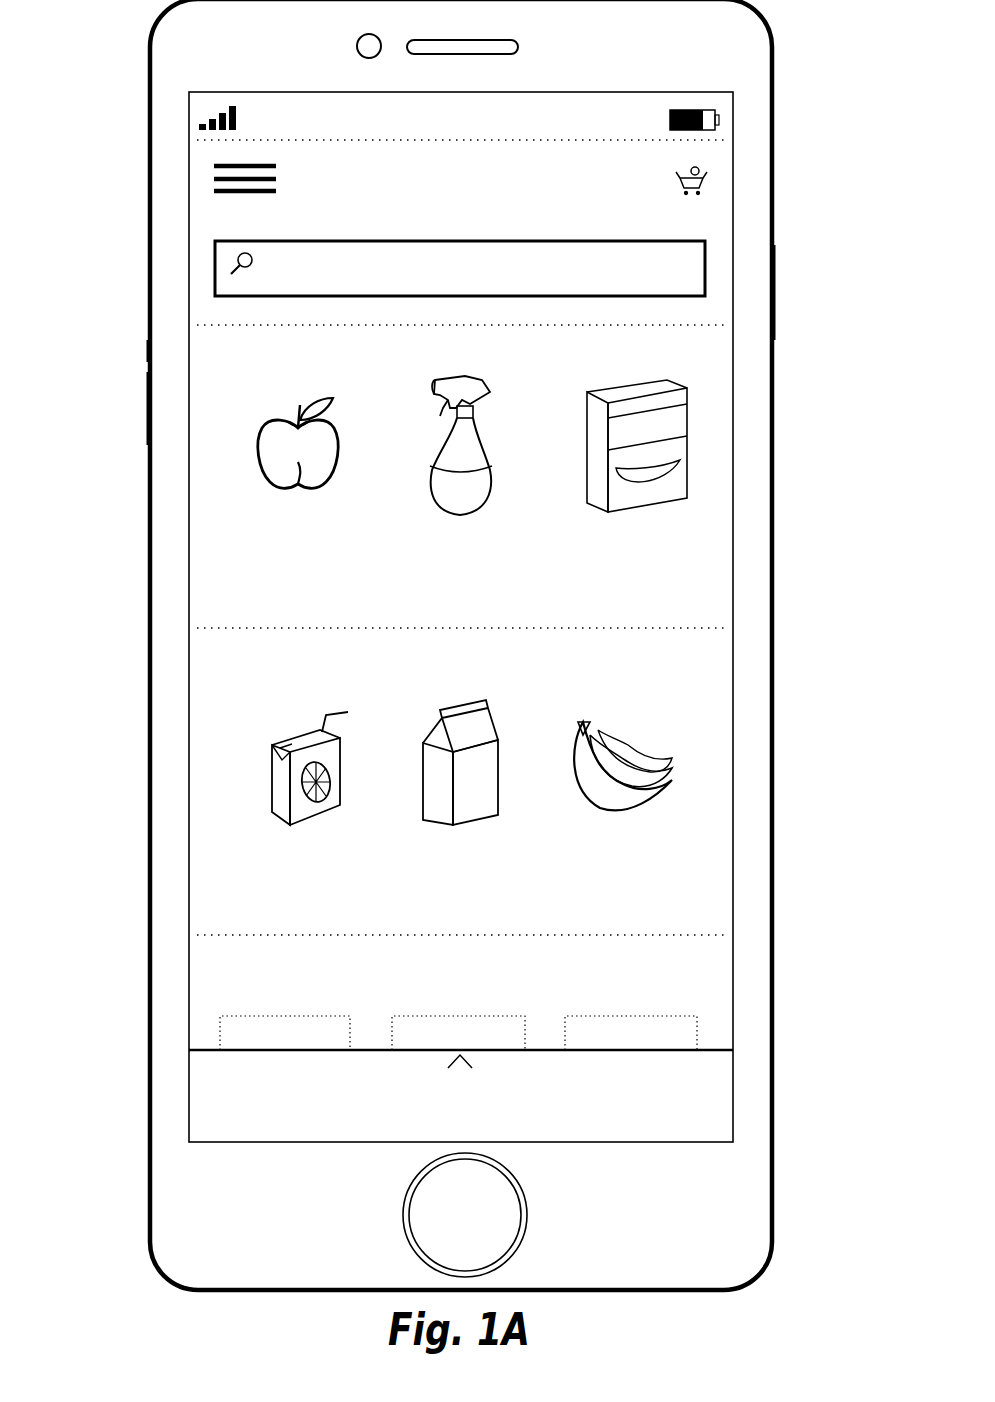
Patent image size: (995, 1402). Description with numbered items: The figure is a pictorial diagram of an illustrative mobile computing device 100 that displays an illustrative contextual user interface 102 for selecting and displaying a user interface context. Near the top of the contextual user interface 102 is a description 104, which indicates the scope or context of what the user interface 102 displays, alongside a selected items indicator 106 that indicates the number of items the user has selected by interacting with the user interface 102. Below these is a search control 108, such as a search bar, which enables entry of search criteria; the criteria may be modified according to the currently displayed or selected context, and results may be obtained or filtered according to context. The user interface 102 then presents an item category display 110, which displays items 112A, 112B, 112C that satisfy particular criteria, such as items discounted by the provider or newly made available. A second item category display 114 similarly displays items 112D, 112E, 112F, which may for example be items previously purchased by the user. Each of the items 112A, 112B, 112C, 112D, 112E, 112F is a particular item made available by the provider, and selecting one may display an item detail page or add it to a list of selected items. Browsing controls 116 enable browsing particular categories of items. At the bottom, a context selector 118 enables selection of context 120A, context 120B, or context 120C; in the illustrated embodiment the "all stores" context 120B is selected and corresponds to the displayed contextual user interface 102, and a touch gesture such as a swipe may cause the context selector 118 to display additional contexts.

The mobile computing device 100 is at (150, 80).
The contextual user interface 102 is at (733, 100).
The description 104 is at (340, 200).
The selected items indicator 106 is at (713, 178).
The search control 108 is at (705, 270).
The item category display 110 is at (177, 325).
The item 112A is at (295, 500).
The item 112B is at (462, 527).
The item 112C is at (637, 516).
The item 112D is at (310, 832).
The item 112E is at (462, 832).
The item 112F is at (603, 820).
The second item category display 114 is at (177, 632).
The browsing controls 116 is at (177, 937).
The context selector 118 is at (177, 1052).
The context 120A is at (275, 1110).
The context 120B is at (425, 1110).
The context 120C is at (645, 1110).